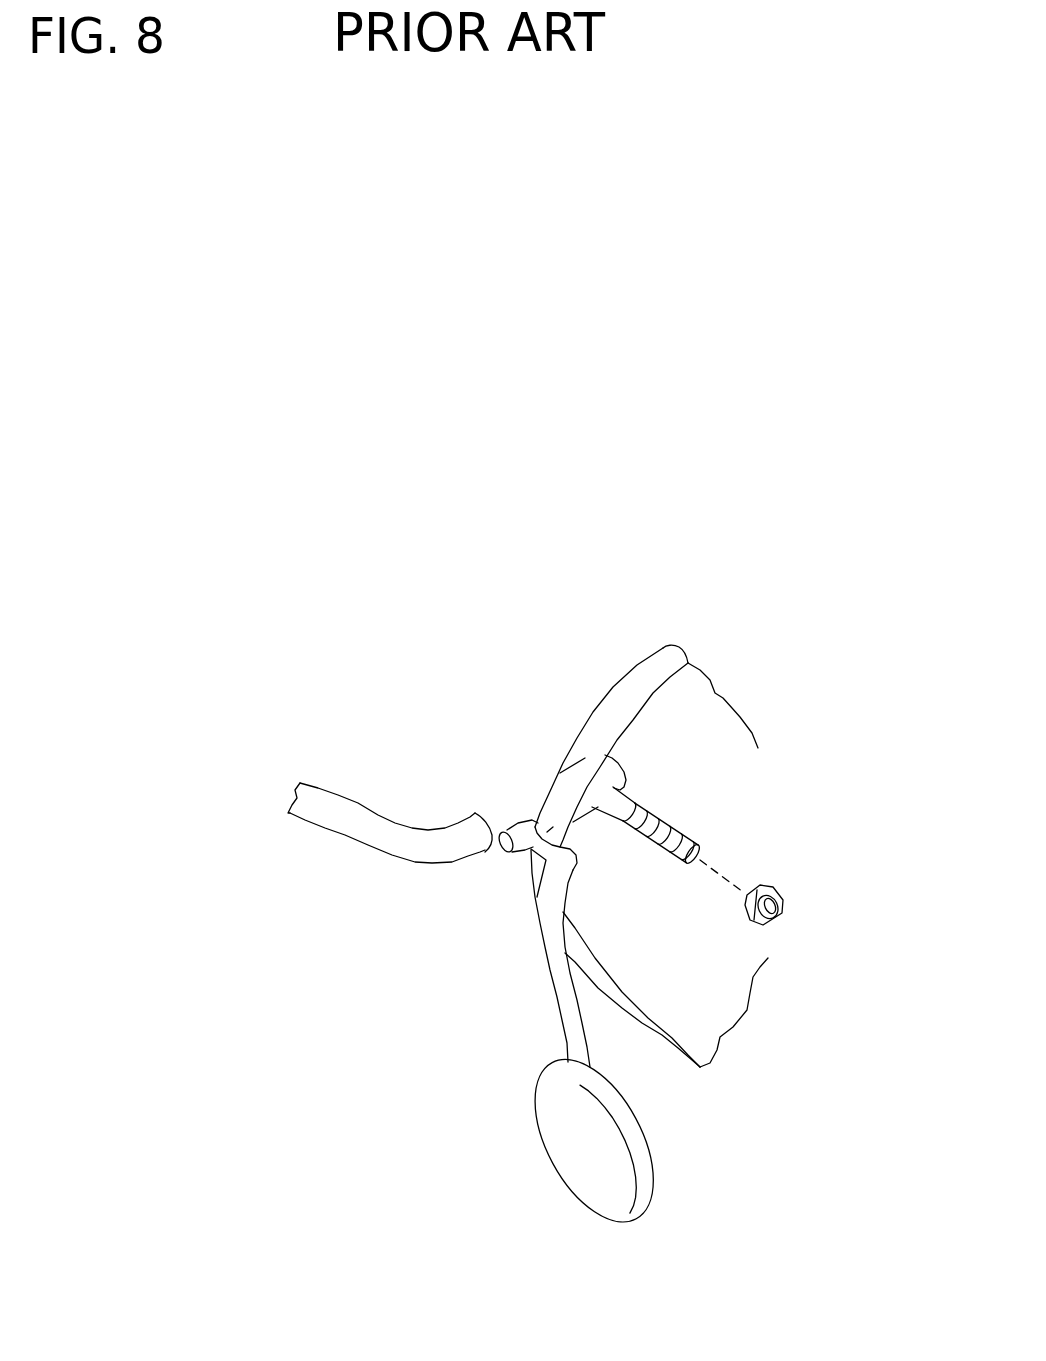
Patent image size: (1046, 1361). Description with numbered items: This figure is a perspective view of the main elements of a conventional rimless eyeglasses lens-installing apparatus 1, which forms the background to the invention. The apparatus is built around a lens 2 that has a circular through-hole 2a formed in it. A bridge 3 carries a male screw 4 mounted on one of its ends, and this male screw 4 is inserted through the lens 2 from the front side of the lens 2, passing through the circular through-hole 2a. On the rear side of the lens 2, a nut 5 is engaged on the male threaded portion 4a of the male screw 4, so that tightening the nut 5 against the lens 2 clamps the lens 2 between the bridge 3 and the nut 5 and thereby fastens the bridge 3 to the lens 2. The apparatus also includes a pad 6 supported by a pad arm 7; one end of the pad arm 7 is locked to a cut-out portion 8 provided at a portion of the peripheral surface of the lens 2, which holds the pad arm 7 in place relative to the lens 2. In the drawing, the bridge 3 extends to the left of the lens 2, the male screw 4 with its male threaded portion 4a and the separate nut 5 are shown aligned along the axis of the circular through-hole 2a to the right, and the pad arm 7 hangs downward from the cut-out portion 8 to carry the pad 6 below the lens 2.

The rimless eyeglasses lens-installing apparatus 1 is at (275, 523).
The lens 2 is at (620, 693).
The circular through-hole 2a is at (635, 795).
The bridge 3 is at (377, 865).
The male screw 4 is at (754, 800).
The male threaded portion 4a is at (769, 818).
The nut 5 is at (809, 892).
The pad 6 is at (551, 1140).
The pad arm 7 is at (512, 958).
The cut-out portion 8 is at (532, 870).